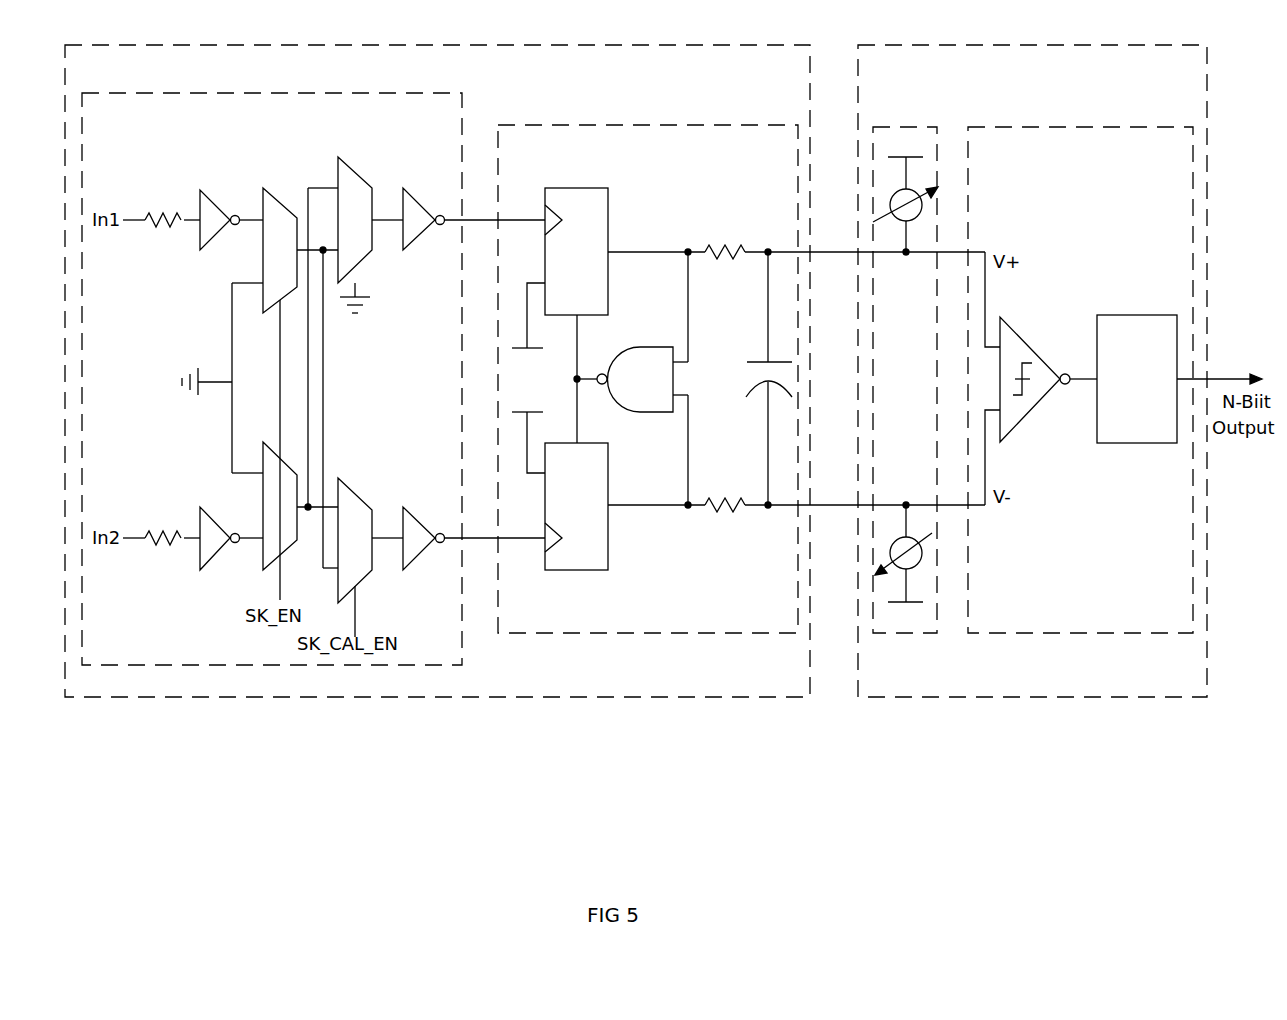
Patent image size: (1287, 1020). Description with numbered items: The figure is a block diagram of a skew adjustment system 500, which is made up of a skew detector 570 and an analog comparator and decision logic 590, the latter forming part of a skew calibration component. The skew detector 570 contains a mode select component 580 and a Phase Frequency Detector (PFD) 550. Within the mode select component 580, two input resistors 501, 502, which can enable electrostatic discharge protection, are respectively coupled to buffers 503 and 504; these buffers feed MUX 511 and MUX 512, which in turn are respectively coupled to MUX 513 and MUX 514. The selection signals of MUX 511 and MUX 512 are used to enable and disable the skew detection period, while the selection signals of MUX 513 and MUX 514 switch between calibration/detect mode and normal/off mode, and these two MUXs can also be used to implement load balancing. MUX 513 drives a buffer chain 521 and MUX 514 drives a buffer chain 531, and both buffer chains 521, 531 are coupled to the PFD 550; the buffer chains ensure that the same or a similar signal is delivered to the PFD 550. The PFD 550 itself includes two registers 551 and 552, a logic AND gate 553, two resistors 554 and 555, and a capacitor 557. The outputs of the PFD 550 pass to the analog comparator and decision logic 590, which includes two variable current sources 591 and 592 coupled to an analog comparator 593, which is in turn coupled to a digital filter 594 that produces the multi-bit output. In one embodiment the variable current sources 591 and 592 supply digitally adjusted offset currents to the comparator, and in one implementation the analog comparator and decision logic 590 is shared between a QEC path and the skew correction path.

The skew adjustment system 500 is at (750, 22).
The skew detector 570 is at (437, 371).
The mode select component 580 is at (272, 379).
The Phase Frequency Detector (PFD) 550 is at (648, 379).
The analog comparator and decision logic 590 is at (1032, 371).
The resistor 501 is at (168, 227).
The resistor 502 is at (168, 547).
The buffer 503 is at (212, 197).
The buffer 504 is at (215, 517).
The MUX 511 is at (283, 203).
The MUX 512 is at (257, 553).
The MUX 513 is at (358, 167).
The MUX 514 is at (347, 482).
The buffer chain 521 is at (428, 200).
The buffer chain 531 is at (430, 547).
The register 551 is at (576, 251).
The register 552 is at (576, 506).
The logic AND gate 553 is at (642, 379).
The resistor 554 is at (725, 243).
The resistor 555 is at (718, 497).
The capacitor 557 is at (752, 378).
The variable current source 591 is at (923, 224).
The variable current source 592 is at (891, 531).
The analog comparator 593 is at (1046, 339).
The digital filter 594 is at (1137, 379).